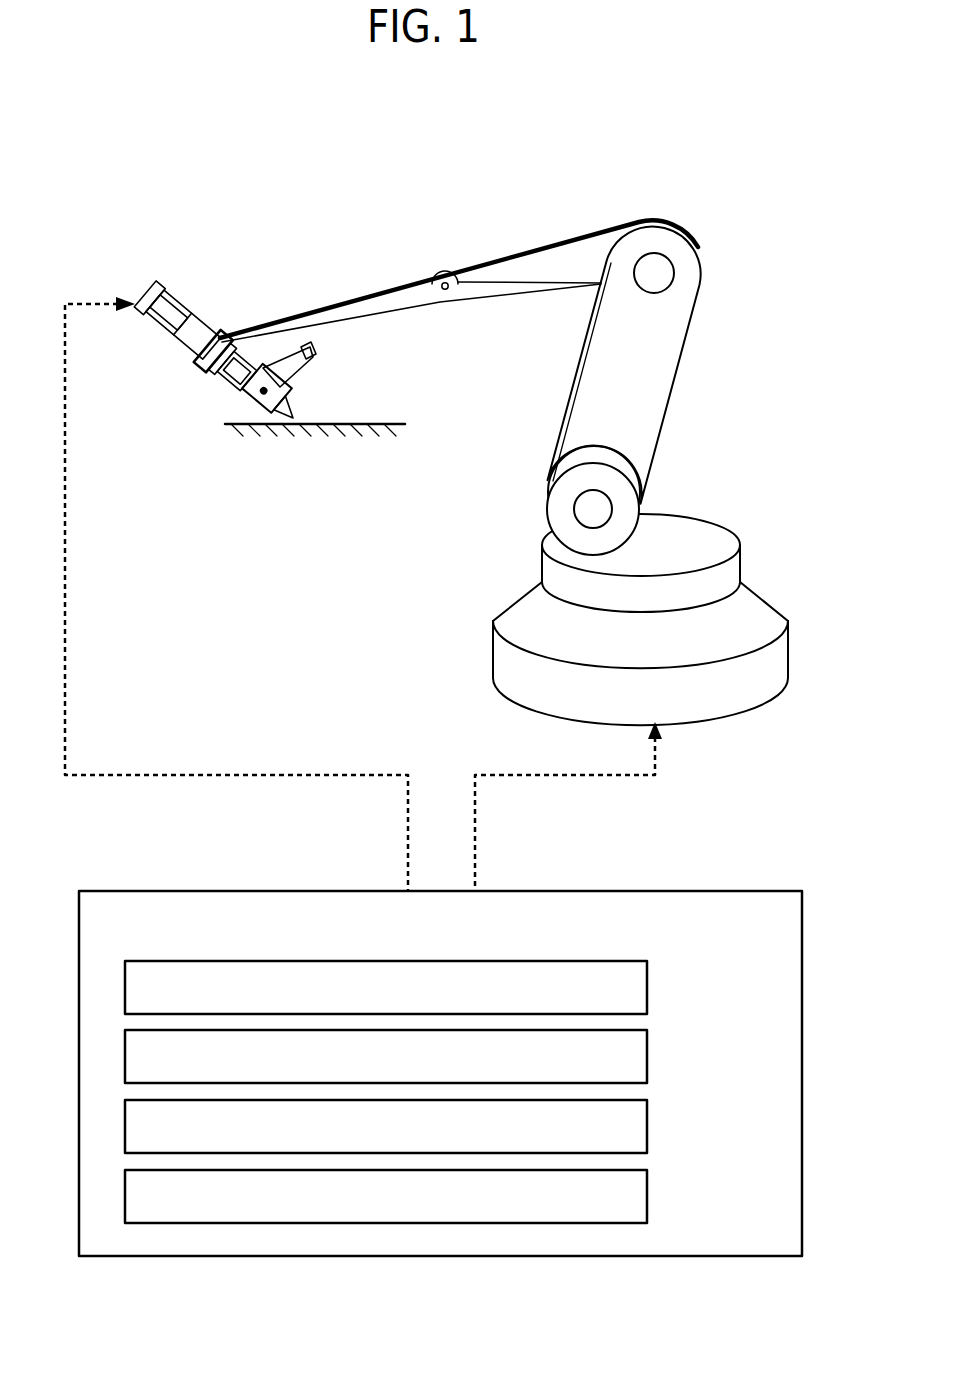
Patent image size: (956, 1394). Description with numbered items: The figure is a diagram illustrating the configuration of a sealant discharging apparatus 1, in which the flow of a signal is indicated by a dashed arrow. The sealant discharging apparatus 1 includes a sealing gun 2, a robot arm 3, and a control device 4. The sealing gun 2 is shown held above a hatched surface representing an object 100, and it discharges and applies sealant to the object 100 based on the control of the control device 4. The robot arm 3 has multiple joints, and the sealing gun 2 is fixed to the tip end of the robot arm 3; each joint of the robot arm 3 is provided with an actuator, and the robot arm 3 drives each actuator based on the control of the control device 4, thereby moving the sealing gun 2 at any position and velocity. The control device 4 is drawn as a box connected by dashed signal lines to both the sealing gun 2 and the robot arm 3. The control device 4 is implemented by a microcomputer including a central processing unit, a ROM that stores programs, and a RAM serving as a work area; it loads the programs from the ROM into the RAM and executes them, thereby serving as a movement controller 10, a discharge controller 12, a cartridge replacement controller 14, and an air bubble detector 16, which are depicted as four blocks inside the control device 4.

The sealant discharging apparatus 1 is at (307, 168).
The sealing gun 2 is at (157, 282).
The robot arm 3 is at (676, 221).
The control device 4 is at (598, 890).
The movement controller 10 is at (647, 984).
The discharge controller 12 is at (647, 1054).
The cartridge replacement controller 14 is at (647, 1124).
The air bubble detector 16 is at (647, 1194).
The object 100 is at (350, 420).